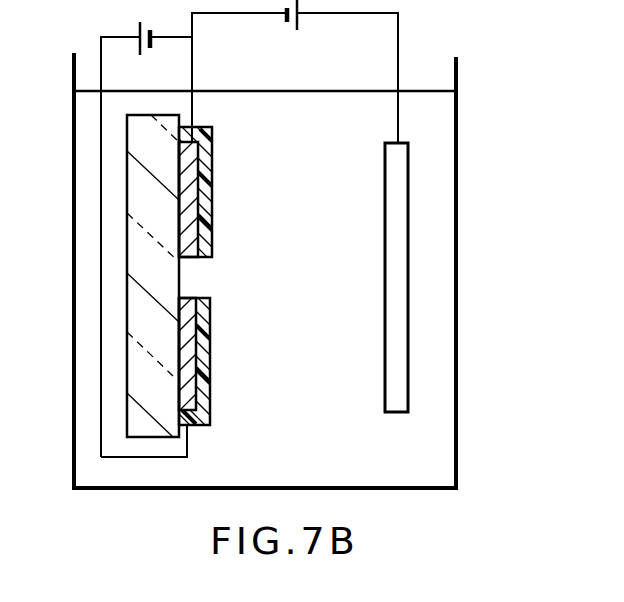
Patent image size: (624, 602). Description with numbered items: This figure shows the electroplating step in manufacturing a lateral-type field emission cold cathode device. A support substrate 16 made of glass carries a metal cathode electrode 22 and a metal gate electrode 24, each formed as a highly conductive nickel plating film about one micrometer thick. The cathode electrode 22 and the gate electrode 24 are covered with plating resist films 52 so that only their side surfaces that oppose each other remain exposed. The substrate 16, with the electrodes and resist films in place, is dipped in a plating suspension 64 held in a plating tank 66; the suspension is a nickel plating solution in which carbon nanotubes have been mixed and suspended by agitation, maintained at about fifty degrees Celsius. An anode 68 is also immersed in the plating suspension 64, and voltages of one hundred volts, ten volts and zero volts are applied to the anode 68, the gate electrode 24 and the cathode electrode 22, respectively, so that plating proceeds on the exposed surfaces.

The support substrate 16 is at (133, 361).
The cathode electrode 22 is at (190, 216).
The gate electrode 24 is at (187, 372).
The plating resist film 52 is at (212, 175).
The plating suspension 64 is at (428, 90).
The plating tank 66 is at (458, 296).
The anode 68 is at (403, 373).